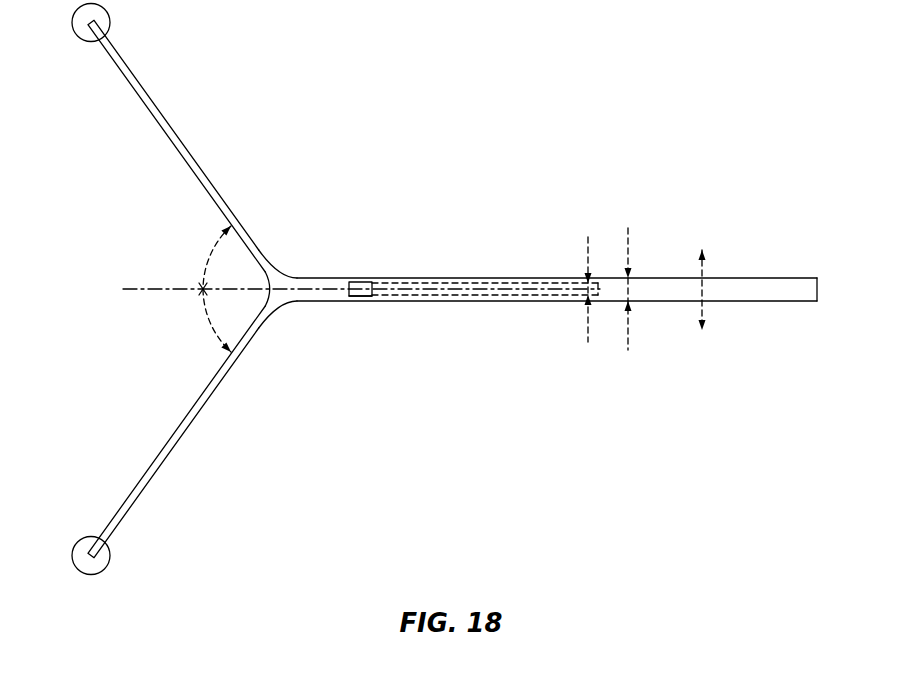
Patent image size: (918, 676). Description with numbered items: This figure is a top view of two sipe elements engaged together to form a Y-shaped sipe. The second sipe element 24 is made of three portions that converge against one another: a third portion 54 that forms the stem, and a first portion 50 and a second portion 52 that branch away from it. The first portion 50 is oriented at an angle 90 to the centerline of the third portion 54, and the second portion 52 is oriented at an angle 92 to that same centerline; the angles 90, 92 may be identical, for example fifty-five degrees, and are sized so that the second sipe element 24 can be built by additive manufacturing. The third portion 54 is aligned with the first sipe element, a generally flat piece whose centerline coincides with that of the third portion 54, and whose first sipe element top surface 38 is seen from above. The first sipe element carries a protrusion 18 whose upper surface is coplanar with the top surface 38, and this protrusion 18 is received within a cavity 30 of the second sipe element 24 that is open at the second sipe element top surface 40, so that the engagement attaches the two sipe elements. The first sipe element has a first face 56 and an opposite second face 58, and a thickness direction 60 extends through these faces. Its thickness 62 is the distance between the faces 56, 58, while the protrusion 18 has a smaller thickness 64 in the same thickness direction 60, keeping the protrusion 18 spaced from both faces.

The protrusion 18 is at (366, 281).
The second sipe element 24 is at (333, 278).
The cavity 30 is at (364, 299).
The first sipe element top surface 38 is at (755, 304).
The second sipe element top surface 40 is at (320, 297).
The first portion 50 is at (178, 135).
The second portion 52 is at (178, 443).
The third portion 54 is at (297, 277).
The first face 56 is at (421, 306).
The second face 58 is at (421, 273).
The thickness direction 60 is at (703, 289).
The thickness 62 is at (628, 250).
The thickness 64 is at (587, 255).
The angle 90 is at (205, 262).
The angle 92 is at (205, 316).